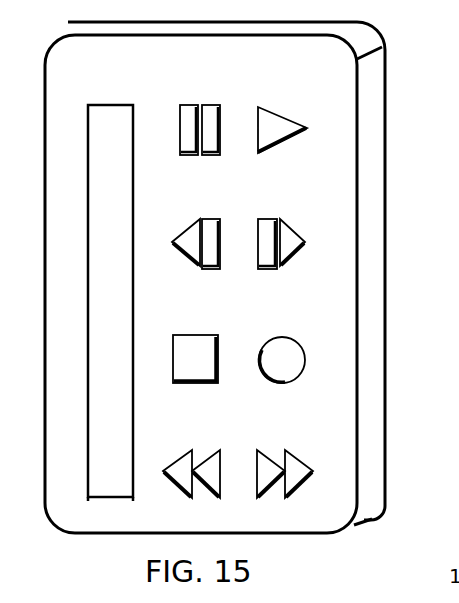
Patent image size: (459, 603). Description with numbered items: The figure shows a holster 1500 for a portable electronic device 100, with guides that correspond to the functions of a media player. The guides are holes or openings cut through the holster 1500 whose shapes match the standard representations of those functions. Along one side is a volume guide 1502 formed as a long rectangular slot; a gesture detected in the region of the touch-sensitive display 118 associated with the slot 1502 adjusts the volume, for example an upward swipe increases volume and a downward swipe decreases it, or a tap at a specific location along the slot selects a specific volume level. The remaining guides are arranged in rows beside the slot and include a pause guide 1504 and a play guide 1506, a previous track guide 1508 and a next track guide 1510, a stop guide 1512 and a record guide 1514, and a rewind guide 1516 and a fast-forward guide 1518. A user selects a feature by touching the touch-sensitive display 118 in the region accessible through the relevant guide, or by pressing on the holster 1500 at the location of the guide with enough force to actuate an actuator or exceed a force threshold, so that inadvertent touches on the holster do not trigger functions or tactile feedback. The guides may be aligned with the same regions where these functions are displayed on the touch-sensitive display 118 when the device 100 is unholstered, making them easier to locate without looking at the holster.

The portable electronic device 100 is at (368, 86).
The touch-sensitive display 118 is at (209, 114).
The holster 1500 is at (108, 537).
The volume guide 1502 is at (105, 104).
The pause guide 1504 is at (187, 137).
The play guide 1506 is at (282, 121).
The previous track guide 1508 is at (187, 252).
The next track guide 1510 is at (288, 232).
The stop guide 1512 is at (170, 378).
The record guide 1514 is at (302, 338).
The rewind guide 1516 is at (172, 481).
The fast-forward guide 1518 is at (298, 454).